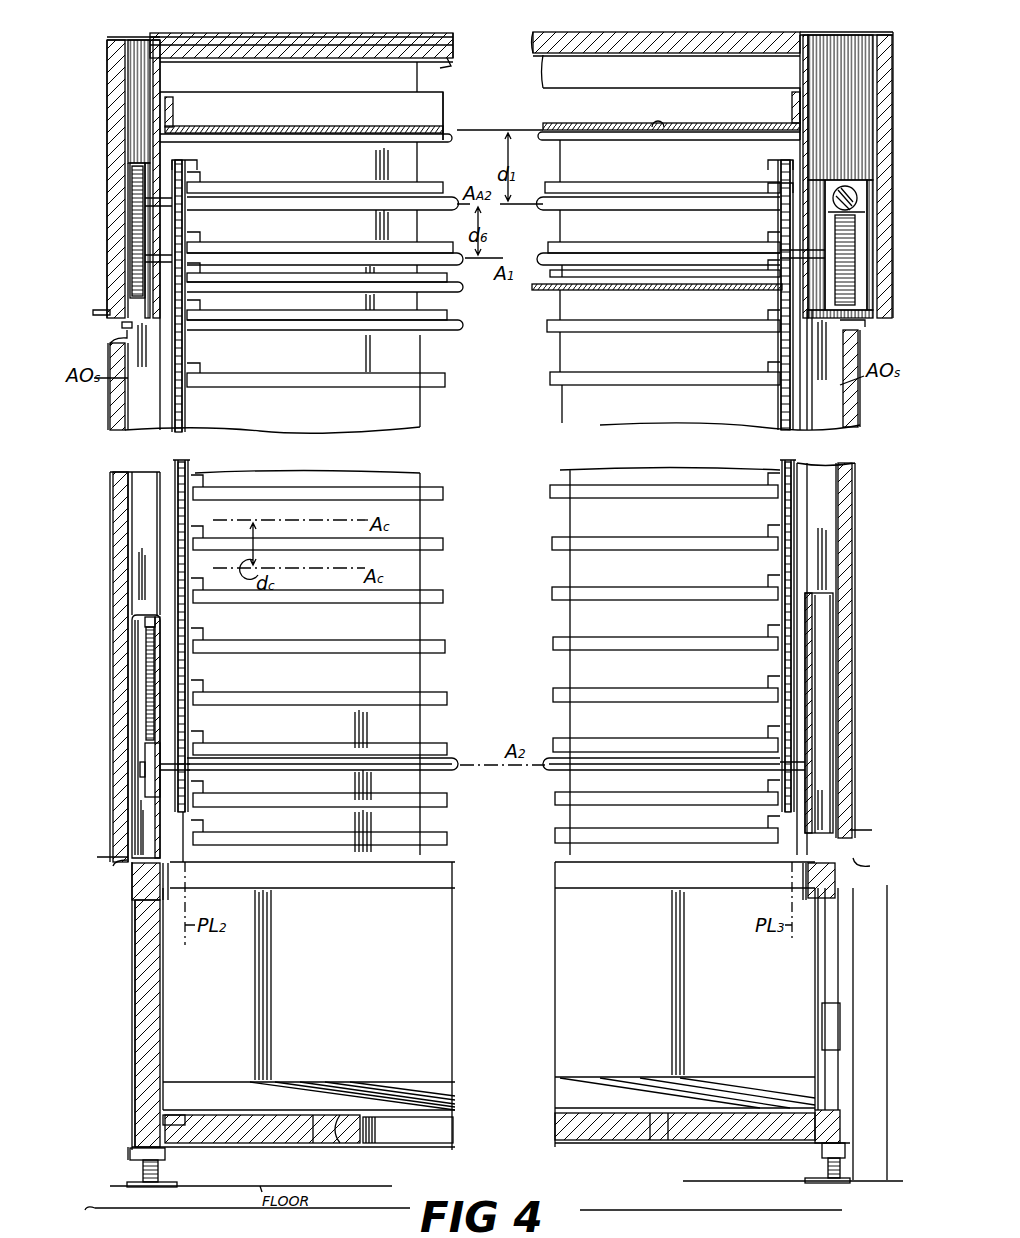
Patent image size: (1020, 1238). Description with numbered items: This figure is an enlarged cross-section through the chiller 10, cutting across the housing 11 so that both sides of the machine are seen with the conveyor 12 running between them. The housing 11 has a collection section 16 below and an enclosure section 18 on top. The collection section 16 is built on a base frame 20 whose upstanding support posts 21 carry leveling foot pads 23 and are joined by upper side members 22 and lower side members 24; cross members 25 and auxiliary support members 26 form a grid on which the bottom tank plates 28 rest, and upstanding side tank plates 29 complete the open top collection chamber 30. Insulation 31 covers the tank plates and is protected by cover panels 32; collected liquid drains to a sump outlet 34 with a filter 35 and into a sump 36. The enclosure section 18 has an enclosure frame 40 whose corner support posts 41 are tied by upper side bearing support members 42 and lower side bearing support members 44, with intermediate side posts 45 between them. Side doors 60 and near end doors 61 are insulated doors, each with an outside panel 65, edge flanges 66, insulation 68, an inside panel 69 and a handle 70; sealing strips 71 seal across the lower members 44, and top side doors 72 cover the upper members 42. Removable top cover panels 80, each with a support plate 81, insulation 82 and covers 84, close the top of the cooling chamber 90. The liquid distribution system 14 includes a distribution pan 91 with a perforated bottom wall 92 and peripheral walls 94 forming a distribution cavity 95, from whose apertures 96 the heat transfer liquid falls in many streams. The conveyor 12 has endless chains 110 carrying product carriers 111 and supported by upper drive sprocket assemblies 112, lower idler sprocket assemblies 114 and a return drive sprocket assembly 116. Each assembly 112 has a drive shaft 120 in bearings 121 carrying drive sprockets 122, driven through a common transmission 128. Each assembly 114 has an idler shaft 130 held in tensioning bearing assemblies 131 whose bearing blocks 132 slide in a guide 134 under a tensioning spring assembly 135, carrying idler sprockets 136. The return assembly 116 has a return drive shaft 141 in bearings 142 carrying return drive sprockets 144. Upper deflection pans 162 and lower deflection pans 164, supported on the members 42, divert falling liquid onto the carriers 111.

The chiller 10 is at (94, 925).
The housing 11 is at (116, 886).
The conveyor 12 is at (164, 456).
The liquid distribution system 14 is at (529, 87).
The collection section 16 is at (124, 1001).
The enclosure section 18 is at (111, 39).
The base frame 20 is at (124, 1160).
The upstanding support posts 21 is at (166, 1156).
The upper side members 22 is at (172, 885).
The leveling foot pads 23 is at (170, 1186).
The lower side members 24 is at (172, 1125).
The cross members 25 is at (383, 1146).
The auxiliary support members 26 is at (330, 1146).
The bottom tank plates 28 is at (286, 1116).
The side tank plates 29 is at (163, 1037).
The collection chamber 30 is at (458, 861).
The insulation 31 is at (143, 1026).
The cover panels 32 is at (134, 1066).
The sump outlet 34 is at (809, 1033).
The filter 35 is at (823, 958).
The sump 36 is at (842, 1208).
The enclosure frame 40 is at (120, 332).
The corner support posts 41 is at (132, 100).
The upper side bearing support members 42 is at (160, 74).
The lower side bearing support members 44 is at (140, 618).
The intermediate side posts 45 is at (138, 520).
The side doors 60 is at (108, 495).
The near end doors 61 is at (438, 527).
The outside panel 65 is at (116, 408).
The edge flanges 66 is at (112, 342).
The insulation 68 is at (112, 430).
The inside panel 69 is at (125, 440).
The handle 70 is at (100, 857).
The sealing strips 71 is at (150, 630).
The top side doors 72 is at (110, 165).
The top cover panels 80 is at (412, 45).
The support plate 81 is at (372, 42).
The insulation 82 is at (444, 32).
The covers 84 is at (452, 70).
The cooling chamber 90 is at (292, 68).
The liquid distribution pan 91 is at (444, 97).
The perforated bottom wall 92 is at (606, 123).
The upstanding peripheral walls 94 is at (652, 90).
The liquid distribution cavity 95 is at (355, 95).
The apertures 96 is at (695, 124).
The endless chains 110 is at (190, 460).
The carriers 111 is at (332, 184).
The upper drive sprocket assemblies 112 is at (611, 248).
The lower idler sprocket assemblies 114 is at (461, 757).
The return drive sprocket assembly 116 is at (721, 178).
The drive shaft 120 is at (687, 250).
The bearings 121 is at (130, 237).
The drive sprockets 122 is at (190, 235).
The transmission 128 is at (857, 173).
The idler shaft 130 is at (318, 772).
The tensioning bearing assemblies 131 is at (140, 660).
The bearing blocks 132 is at (148, 750).
The guide 134 is at (145, 807).
The tensioning spring assembly 135 is at (150, 680).
The idler sprockets 136 is at (200, 788).
The return drive shaft 141 is at (650, 240).
The bearings 142 is at (812, 178).
The return drive sprockets 144 is at (192, 170).
The upper deflection pans 162 is at (463, 292).
The lower deflection pans 164 is at (463, 330).